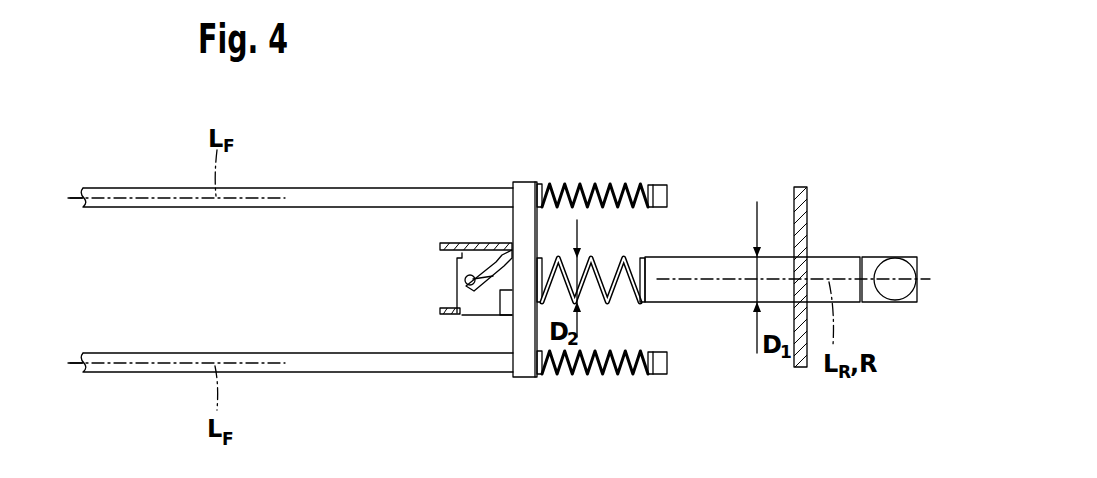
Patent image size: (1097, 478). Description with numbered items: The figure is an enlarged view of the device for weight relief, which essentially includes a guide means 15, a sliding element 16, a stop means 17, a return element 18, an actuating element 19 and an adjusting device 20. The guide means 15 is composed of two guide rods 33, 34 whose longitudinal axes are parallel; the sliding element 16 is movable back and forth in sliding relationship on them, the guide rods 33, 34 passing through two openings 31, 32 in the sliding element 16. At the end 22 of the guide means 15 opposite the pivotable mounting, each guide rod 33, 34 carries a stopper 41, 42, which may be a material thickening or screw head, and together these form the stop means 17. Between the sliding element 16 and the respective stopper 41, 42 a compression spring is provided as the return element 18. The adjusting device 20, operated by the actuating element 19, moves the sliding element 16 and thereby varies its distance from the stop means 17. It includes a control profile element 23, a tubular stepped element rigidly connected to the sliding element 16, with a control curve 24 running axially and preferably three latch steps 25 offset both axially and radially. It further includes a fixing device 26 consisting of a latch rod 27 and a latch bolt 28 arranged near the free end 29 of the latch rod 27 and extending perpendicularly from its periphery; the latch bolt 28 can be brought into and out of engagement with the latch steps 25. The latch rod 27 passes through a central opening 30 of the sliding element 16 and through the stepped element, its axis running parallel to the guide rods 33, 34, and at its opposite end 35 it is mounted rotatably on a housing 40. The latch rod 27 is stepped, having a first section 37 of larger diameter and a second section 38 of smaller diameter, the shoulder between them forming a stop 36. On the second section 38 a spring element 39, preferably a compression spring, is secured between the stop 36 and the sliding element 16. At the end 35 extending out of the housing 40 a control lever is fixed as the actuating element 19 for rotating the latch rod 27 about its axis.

The guide means 15 is at (416, 177).
The sliding element 16 is at (528, 365).
The stop means 17 is at (663, 173).
The return element 18 is at (578, 178).
The actuating element 19 is at (897, 264).
The adjusting device 20 is at (506, 300).
The end of the guide means 22 is at (629, 140).
The control profile element 23 is at (505, 263).
The control curve 24 is at (478, 243).
The latch steps 25 is at (461, 316).
The fixing device 26 is at (719, 250).
The latch rod 27 is at (693, 314).
The latch bolt 28 is at (465, 281).
The free end of the latch rod 29 is at (418, 247).
The central opening 30 is at (545, 280).
The opening 31 is at (549, 375).
The opening 32 is at (540, 188).
The guide rod 33 is at (317, 372).
The guide rod 34 is at (317, 188).
The end of the latch rod 35 is at (879, 205).
The stop 36 is at (645, 257).
The first section 37 is at (737, 300).
The second section 38 is at (612, 290).
The spring element 39 is at (598, 269).
The housing 40 is at (803, 195).
The stopper 41 is at (660, 376).
The stopper 42 is at (668, 196).